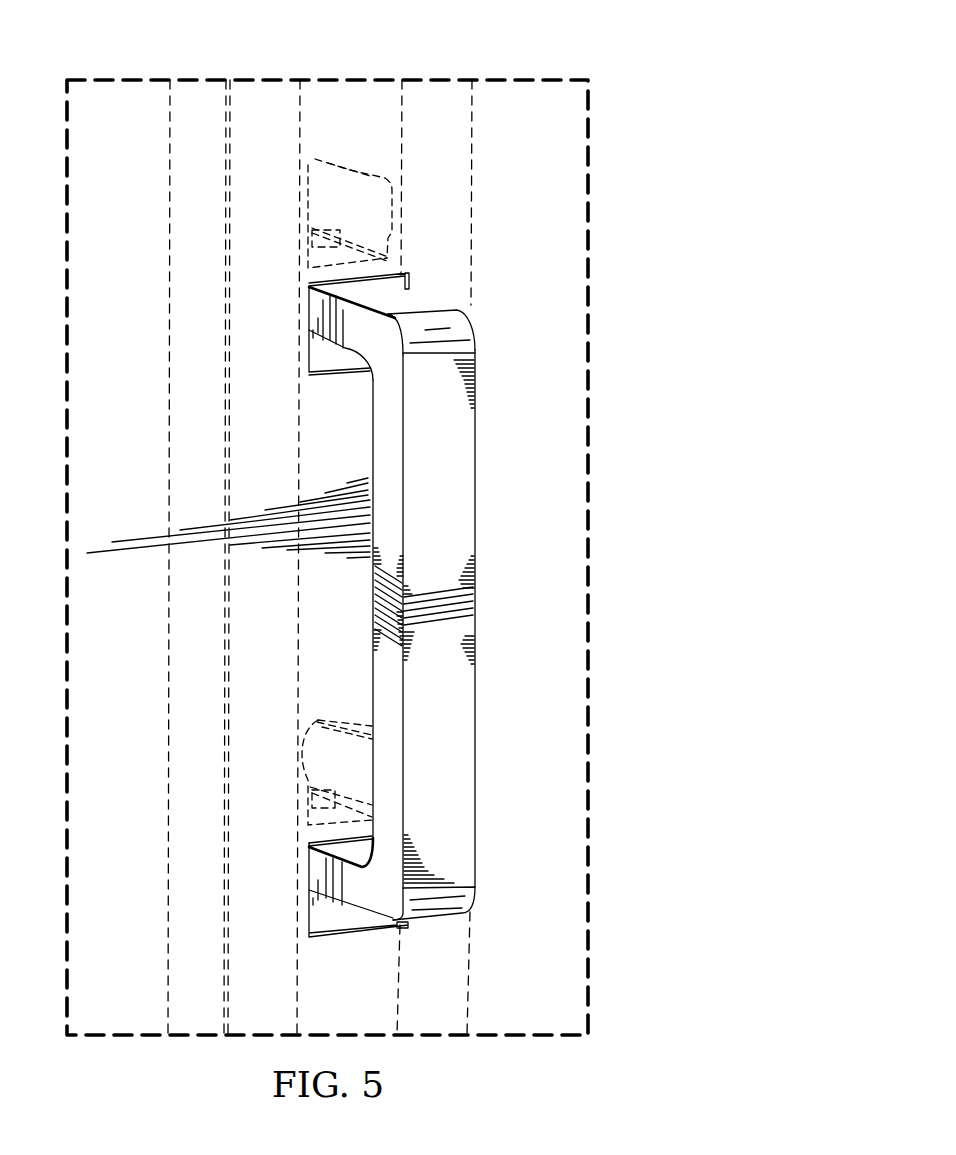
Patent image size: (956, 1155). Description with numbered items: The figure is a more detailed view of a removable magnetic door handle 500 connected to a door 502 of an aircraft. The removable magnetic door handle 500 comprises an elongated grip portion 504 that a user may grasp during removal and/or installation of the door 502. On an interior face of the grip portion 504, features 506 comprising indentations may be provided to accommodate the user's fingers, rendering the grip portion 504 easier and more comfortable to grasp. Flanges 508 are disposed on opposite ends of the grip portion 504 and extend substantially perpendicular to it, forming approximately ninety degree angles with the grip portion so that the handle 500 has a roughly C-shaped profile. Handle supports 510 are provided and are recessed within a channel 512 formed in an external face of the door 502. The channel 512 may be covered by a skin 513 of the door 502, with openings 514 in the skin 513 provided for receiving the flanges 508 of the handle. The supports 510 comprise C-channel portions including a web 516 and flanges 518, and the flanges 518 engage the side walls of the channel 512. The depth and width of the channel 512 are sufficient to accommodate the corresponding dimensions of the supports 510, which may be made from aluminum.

The removable magnetic door handle 500 is at (322, 645).
The door 502 is at (563, 812).
The elongated grip portion 504 is at (465, 522).
The features 506 is at (365, 668).
The flanges 508 is at (427, 308).
The handle supports 510 is at (403, 253).
The channel 512 is at (385, 105).
The skin 513 is at (327, 110).
The openings 514 is at (337, 357).
The web 516 is at (362, 188).
The flanges 518 is at (357, 248).